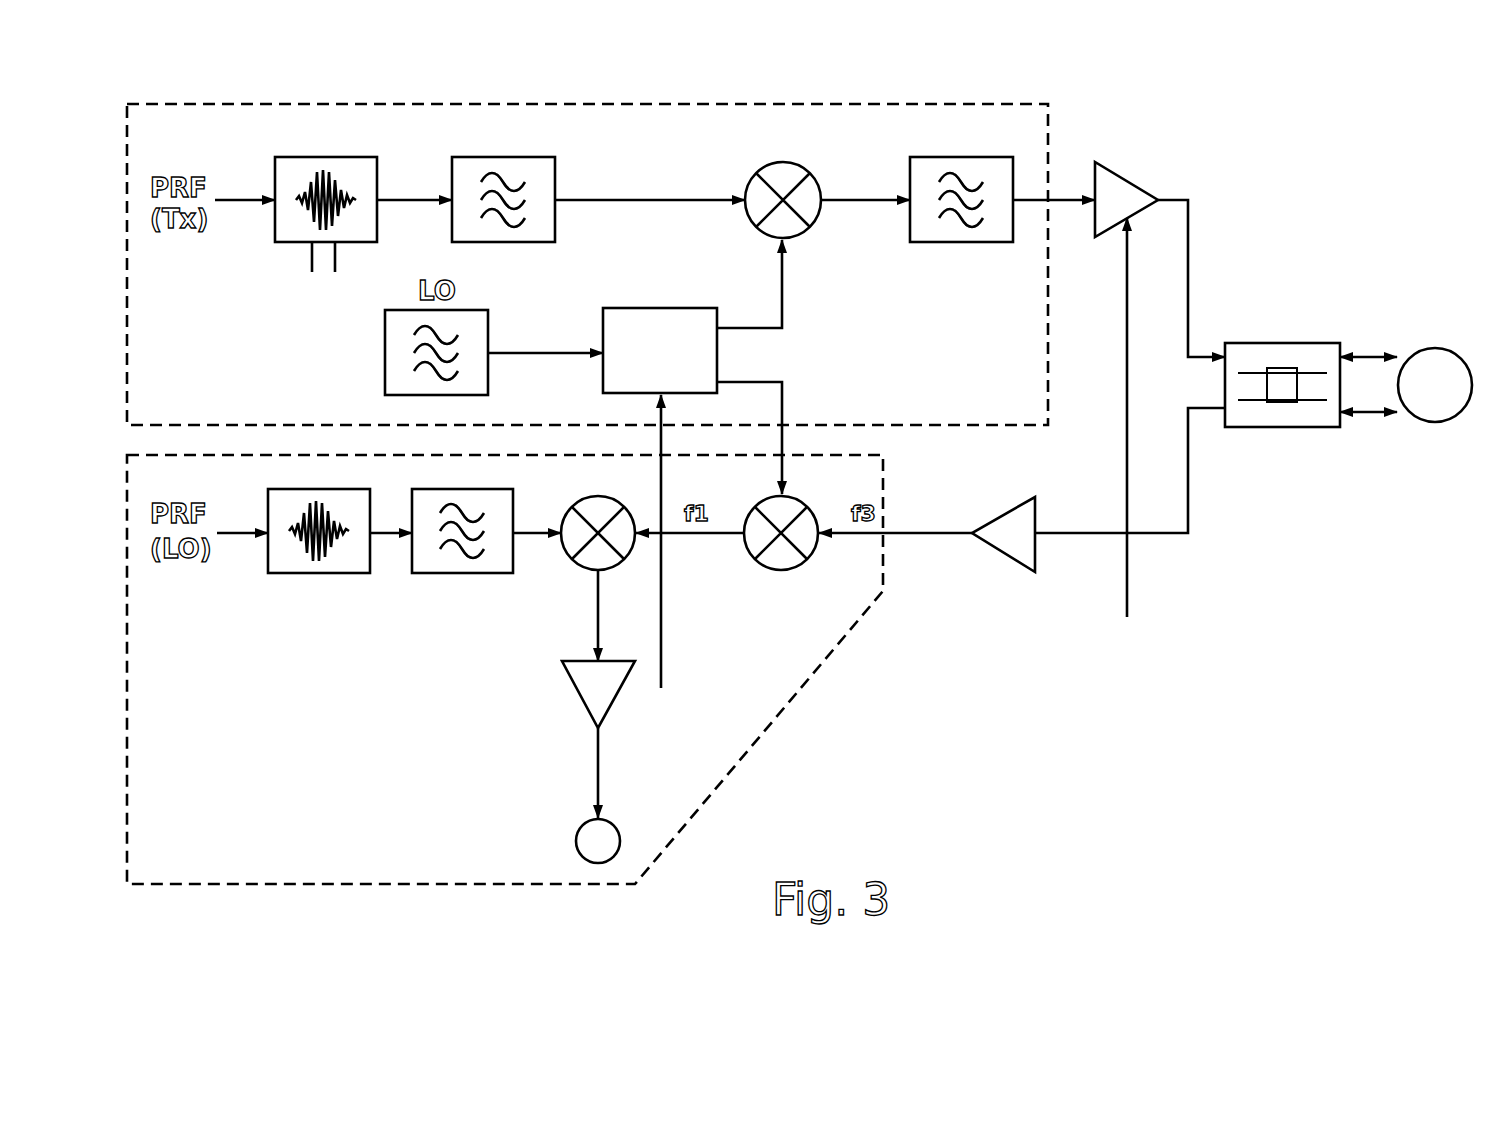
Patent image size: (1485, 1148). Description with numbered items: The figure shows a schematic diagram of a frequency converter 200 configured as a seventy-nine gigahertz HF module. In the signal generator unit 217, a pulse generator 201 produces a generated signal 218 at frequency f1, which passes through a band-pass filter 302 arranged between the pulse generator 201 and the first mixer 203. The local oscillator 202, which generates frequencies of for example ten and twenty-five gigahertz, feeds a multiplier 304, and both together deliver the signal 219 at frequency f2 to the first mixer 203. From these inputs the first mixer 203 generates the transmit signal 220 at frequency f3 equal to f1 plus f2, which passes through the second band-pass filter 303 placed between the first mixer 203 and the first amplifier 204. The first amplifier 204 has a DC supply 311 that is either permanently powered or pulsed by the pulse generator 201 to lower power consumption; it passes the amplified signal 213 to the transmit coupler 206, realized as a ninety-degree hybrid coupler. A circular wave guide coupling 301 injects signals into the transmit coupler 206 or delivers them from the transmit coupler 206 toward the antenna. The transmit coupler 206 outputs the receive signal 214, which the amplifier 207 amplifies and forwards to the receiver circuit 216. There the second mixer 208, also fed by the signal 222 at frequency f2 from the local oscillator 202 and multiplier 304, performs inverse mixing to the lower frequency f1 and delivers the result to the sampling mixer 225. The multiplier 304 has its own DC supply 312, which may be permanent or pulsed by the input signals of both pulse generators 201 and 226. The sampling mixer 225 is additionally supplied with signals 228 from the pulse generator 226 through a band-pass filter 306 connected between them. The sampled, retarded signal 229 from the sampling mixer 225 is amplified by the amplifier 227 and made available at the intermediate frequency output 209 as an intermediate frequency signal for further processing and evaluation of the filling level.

The frequency converter 200 is at (1042, 728).
The pulse generator 201 is at (295, 242).
The local oscillator 202 is at (385, 315).
The first mixer 203 is at (750, 222).
The first amplifier 204 is at (1108, 162).
The transmit coupler 206 is at (1280, 343).
The amplifier 207 is at (1000, 553).
The second mixer 208 is at (775, 572).
The intermediate frequency output 209 is at (576, 841).
The amplified signal 213 is at (1190, 258).
The receive signal 214 is at (1188, 497).
The receiver circuit 216 is at (745, 755).
The signal generator unit 217 is at (650, 104).
The generated signal 218 is at (636, 205).
The signal 219 is at (784, 300).
The transmit signal 220 is at (855, 205).
The signal 222 is at (784, 405).
The sampling mixer 225 is at (570, 555).
The pulse generator 226 is at (315, 575).
The amplifier 227 is at (578, 693).
The signals 228 is at (527, 528).
The sampled, retarded signal 229 is at (596, 590).
The circular wave guide coupling 301 is at (1430, 348).
The band-pass filter 302 is at (490, 242).
The second band-pass filter 303 is at (958, 244).
The multiplier 304 is at (717, 358).
The band-pass filter 306 is at (435, 575).
The DC supply 311 is at (1130, 598).
The DC supply 312 is at (664, 683).